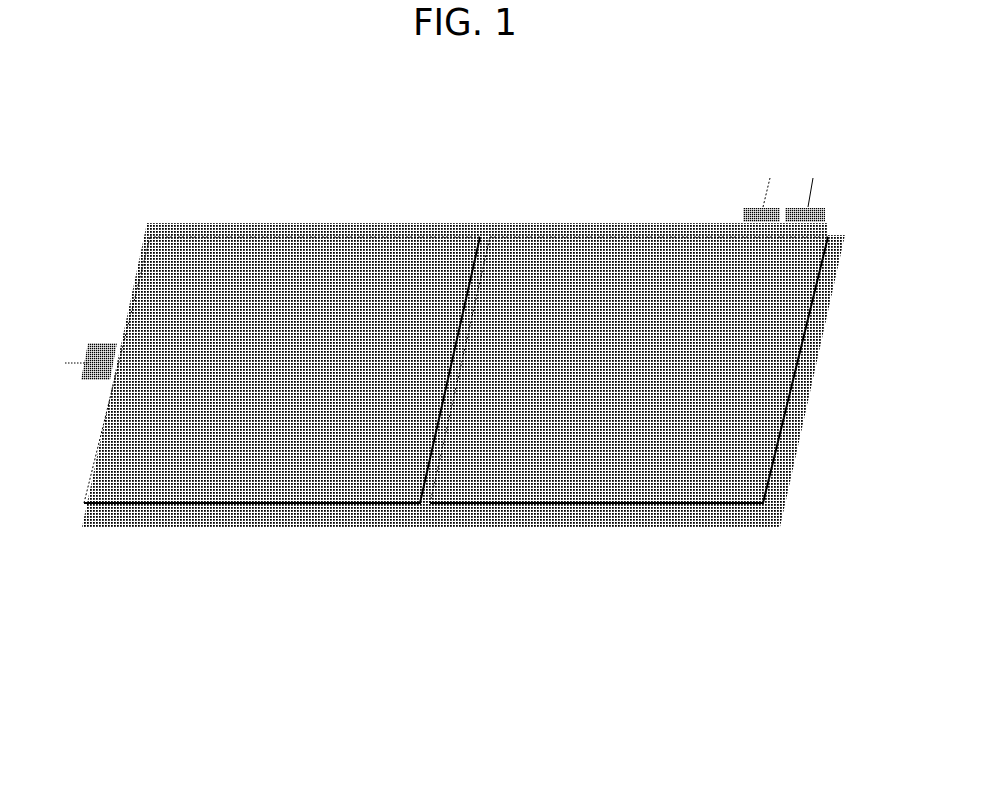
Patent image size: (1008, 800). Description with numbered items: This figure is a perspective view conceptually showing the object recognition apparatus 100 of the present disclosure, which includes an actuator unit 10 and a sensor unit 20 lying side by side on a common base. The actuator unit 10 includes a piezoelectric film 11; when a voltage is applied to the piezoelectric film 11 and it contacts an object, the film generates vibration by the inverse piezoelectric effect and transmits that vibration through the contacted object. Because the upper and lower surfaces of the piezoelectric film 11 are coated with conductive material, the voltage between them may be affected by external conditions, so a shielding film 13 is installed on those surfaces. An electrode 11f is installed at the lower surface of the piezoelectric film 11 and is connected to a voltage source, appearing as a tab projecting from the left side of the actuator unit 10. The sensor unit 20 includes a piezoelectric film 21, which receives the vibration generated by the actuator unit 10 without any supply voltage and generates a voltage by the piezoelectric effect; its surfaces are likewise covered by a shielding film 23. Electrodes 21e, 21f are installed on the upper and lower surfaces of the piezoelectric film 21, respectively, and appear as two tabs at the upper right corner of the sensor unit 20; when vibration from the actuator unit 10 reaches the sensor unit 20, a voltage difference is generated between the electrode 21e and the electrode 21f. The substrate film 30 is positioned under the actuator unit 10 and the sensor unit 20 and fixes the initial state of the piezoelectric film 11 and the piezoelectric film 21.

The object recognition apparatus 100 is at (464, 411).
The actuator unit 10 is at (272, 363).
The piezoelectric film 11 is at (200, 497).
The electrode 11f is at (105, 343).
The shielding film 13 is at (132, 472).
The sensor unit 20 is at (647, 355).
The piezoelectric film 21 is at (583, 497).
The electrode 21e is at (757, 207).
The electrode 21f is at (818, 207).
The shielding film 23 is at (515, 472).
The substrate film 30 is at (395, 522).